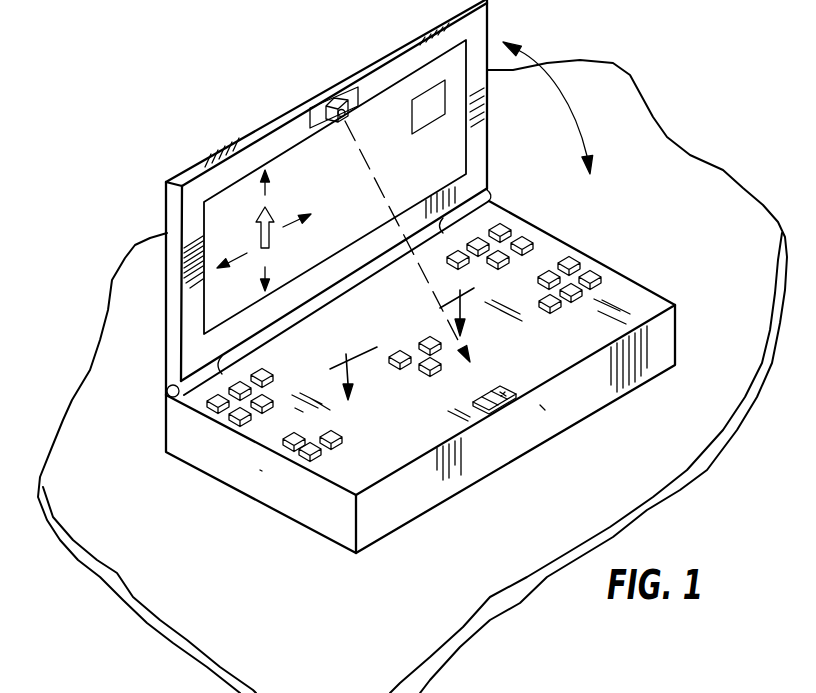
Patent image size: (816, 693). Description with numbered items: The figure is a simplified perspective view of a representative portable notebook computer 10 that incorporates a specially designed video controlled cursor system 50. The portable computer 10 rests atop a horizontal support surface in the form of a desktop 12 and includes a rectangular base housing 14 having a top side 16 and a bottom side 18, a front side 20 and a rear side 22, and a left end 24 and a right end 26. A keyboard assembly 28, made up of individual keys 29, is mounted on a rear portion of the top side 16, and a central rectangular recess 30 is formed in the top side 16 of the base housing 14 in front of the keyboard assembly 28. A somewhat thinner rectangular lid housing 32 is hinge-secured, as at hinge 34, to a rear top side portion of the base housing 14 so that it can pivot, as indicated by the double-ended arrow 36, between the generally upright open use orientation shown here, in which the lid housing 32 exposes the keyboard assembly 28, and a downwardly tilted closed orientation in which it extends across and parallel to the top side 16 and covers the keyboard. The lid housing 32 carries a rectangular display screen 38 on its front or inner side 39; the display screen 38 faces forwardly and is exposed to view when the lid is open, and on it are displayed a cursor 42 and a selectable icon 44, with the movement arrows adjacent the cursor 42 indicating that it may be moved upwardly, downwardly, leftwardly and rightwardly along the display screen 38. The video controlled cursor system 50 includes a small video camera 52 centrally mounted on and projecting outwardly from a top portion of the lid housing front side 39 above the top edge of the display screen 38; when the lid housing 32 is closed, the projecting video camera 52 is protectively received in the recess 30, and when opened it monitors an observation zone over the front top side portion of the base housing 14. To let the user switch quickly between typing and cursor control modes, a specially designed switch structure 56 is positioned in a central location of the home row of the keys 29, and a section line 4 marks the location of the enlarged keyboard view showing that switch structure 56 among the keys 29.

The portable notebook computer 10 is at (210, 498).
The desktop 12 is at (661, 208).
The base housing 14 is at (646, 281).
The top side 16 is at (368, 462).
The bottom side 18 is at (424, 514).
The front side 20 is at (548, 418).
The rear side 22 is at (164, 432).
The left end 24 is at (272, 480).
The right end 26 is at (677, 331).
The keyboard assembly 28 is at (288, 384).
The keys 29 is at (523, 236).
The central rectangular recess 30 is at (492, 388).
The lid housing 32 is at (175, 273).
The hinge 34 is at (168, 389).
The double-ended arrow 36 is at (577, 107).
The display screen 38 is at (450, 143).
The front side of lid housing 39 is at (258, 148).
The cursor 42 is at (270, 213).
The selectable icon 44 is at (424, 107).
The video controlled cursor system 50 is at (318, 72).
The video camera 52 is at (340, 97).
The switch structure 56 is at (408, 337).
The section line 4- 4 is at (405, 330).